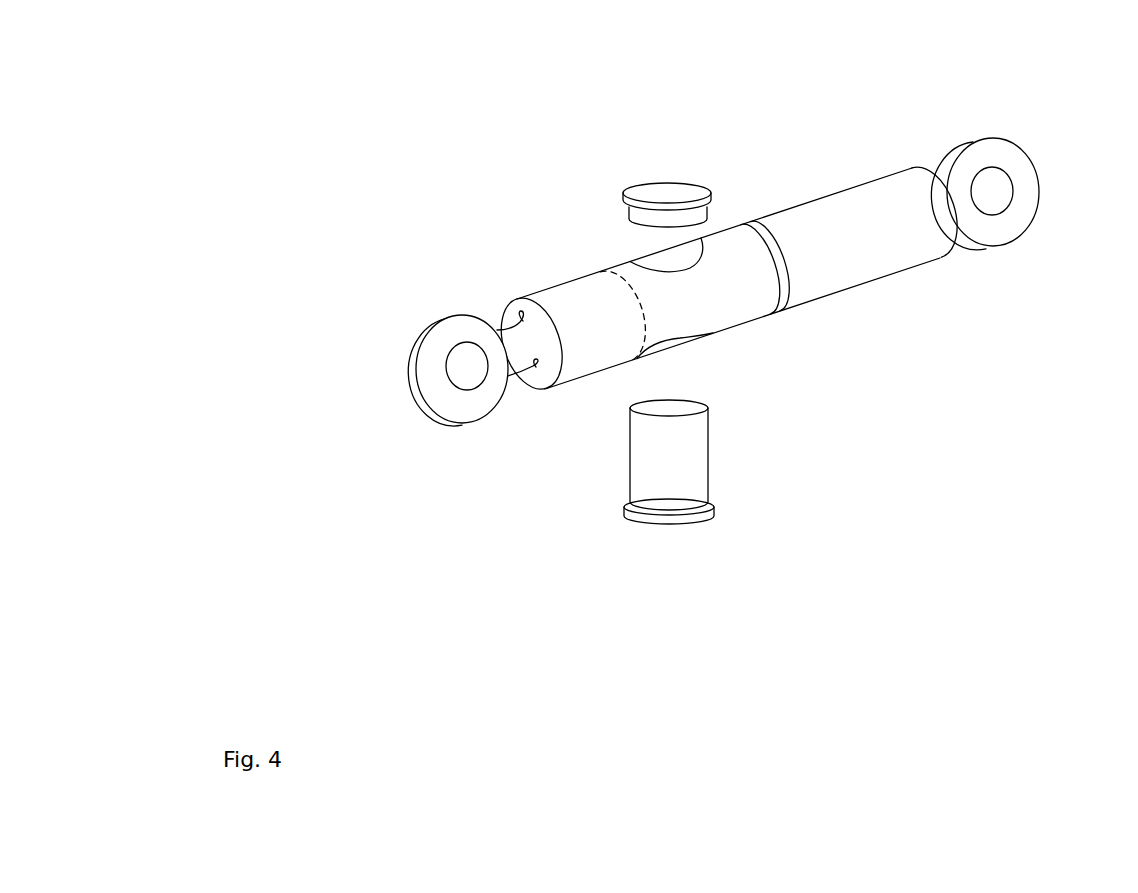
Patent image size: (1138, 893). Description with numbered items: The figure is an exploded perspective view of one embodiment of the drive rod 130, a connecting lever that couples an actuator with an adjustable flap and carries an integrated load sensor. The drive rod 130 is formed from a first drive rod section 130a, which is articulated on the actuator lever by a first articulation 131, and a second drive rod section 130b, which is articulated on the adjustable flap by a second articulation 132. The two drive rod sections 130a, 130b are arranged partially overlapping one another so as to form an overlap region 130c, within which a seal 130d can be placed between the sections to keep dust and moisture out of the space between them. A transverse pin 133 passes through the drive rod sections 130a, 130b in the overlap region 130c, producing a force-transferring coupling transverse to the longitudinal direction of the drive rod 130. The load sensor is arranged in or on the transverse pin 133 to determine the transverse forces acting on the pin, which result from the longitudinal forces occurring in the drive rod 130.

The drive rod 130 is at (697, 264).
The first drive rod section 130a is at (577, 370).
The second drive rod section 130b is at (913, 265).
The overlap region 130c is at (733, 336).
The seal 130d is at (741, 225).
The first articulation 131 is at (380, 318).
The second articulation 132 is at (1046, 137).
The transverse pin 133 is at (710, 478).